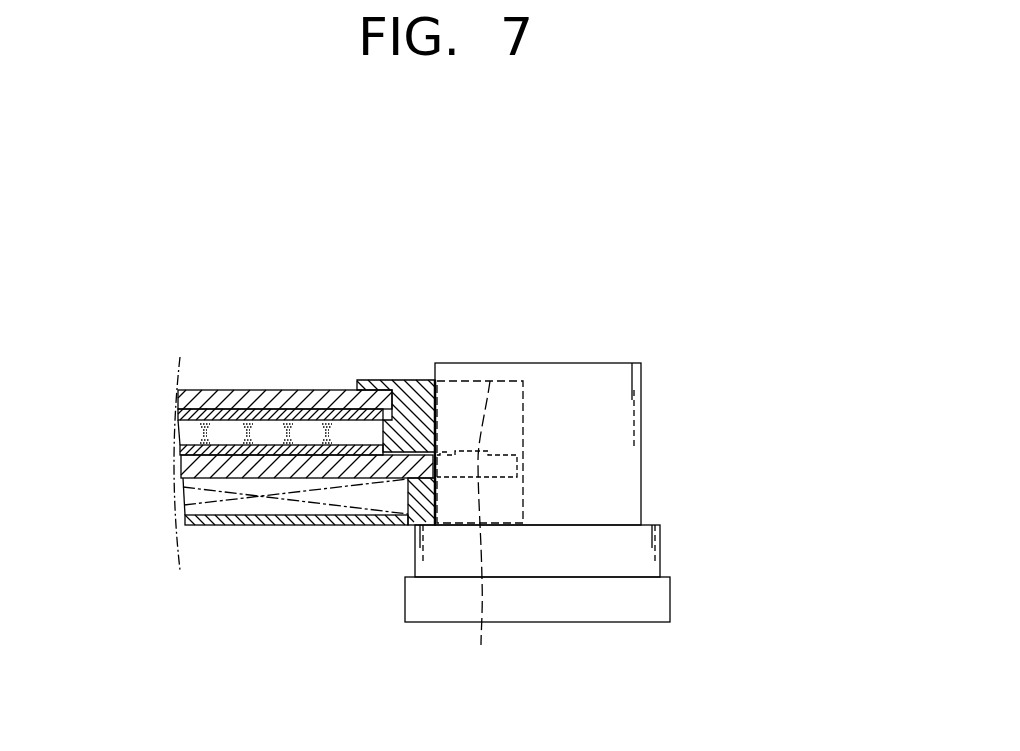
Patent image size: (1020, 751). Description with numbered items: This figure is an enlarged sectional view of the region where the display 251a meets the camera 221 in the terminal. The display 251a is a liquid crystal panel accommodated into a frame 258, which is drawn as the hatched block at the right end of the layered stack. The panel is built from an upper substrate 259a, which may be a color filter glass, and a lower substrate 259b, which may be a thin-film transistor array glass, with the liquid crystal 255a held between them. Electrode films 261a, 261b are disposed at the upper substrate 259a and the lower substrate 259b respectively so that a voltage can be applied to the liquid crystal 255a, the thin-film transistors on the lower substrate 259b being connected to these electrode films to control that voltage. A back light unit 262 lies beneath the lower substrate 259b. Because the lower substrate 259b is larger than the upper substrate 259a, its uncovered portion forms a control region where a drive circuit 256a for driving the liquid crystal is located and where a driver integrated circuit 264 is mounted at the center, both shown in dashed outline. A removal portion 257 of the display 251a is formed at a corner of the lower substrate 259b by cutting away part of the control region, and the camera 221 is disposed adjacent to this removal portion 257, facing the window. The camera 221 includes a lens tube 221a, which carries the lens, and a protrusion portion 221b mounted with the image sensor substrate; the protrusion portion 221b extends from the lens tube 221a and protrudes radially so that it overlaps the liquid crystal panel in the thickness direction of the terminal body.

The display 251a is at (252, 408).
The upper substrate 259a is at (193, 400).
The electrode film 261a is at (183, 416).
The liquid crystal 255a is at (187, 433).
The electrode film 261b is at (180, 450).
The lower substrate 259b is at (182, 467).
The back light unit 262 is at (256, 517).
The frame 258 is at (408, 392).
The drive circuit 256a is at (423, 452).
The driver integrated circuit 264 is at (490, 381).
The removal portion 257 is at (482, 526).
The camera 221 is at (594, 492).
The lens tube 221a is at (617, 402).
The protrusion portion 221b is at (640, 557).